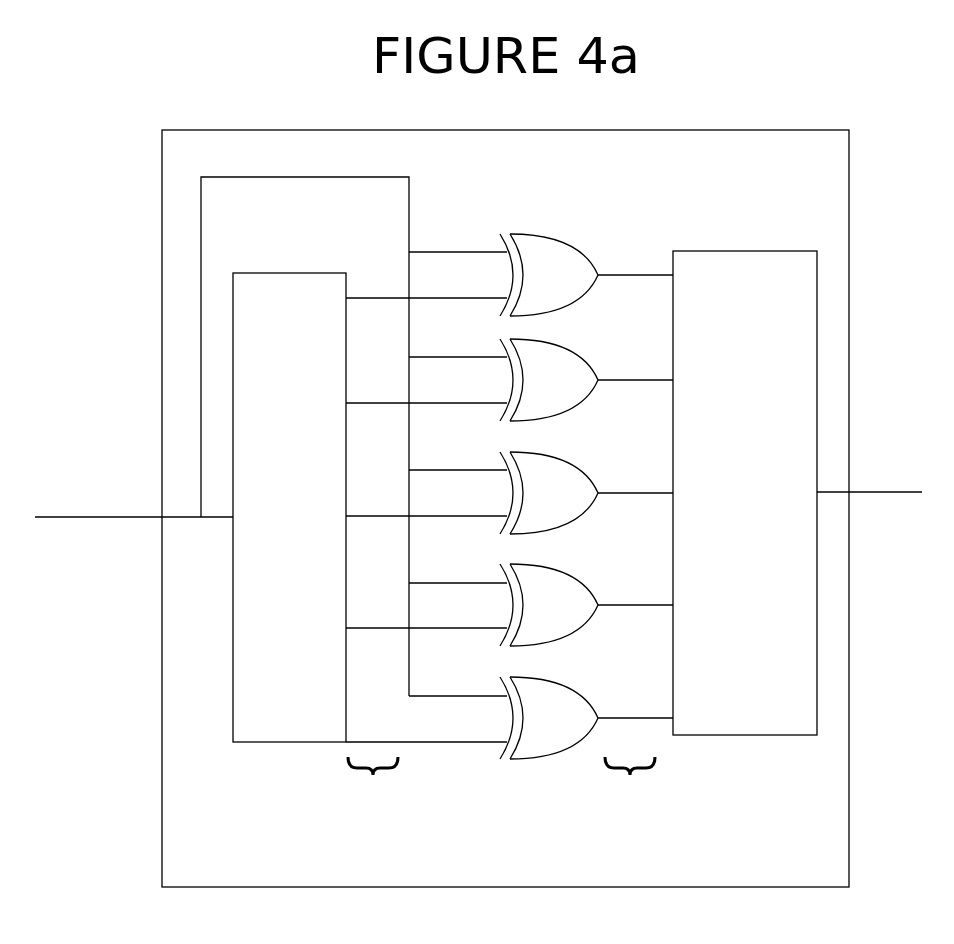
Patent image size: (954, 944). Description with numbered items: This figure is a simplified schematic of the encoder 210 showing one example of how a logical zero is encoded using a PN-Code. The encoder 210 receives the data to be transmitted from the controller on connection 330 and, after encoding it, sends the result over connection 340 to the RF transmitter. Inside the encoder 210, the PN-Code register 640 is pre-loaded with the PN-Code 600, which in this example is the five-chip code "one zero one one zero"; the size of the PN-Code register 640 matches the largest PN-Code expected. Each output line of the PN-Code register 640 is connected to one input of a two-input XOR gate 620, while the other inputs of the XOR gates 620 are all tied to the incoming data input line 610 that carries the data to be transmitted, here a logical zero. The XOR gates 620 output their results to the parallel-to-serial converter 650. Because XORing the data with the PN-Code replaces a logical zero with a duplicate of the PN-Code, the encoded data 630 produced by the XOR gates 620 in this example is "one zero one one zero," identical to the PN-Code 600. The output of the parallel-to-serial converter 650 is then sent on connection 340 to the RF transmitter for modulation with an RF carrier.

The encoder 210 is at (505, 508).
The connection 330 is at (115, 517).
The connection 340 is at (880, 492).
The PN-Code 600 is at (378, 795).
The data input line 610 is at (409, 225).
The XOR gate 620 is at (549, 496).
The encoded data 630 is at (628, 543).
The PN-Code register 640 is at (370, 507).
The parallel-to-serial converter 650 is at (745, 493).